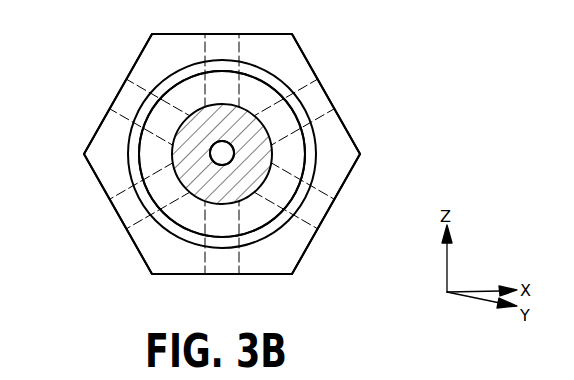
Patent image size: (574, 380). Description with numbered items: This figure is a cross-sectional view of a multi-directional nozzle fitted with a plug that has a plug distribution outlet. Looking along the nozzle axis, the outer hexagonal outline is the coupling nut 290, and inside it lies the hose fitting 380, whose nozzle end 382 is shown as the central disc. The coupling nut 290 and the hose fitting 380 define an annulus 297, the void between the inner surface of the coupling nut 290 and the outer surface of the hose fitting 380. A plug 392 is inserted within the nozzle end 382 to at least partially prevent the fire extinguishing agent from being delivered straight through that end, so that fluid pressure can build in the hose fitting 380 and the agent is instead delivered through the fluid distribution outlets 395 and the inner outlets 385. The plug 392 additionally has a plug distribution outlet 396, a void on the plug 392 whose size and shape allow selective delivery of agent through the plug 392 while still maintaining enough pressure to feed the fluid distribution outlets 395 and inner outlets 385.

The coupling nut 290 is at (352, 152).
The annulus 297 is at (272, 83).
The inner outlets 385 is at (153, 112).
The hose fitting 380 is at (188, 213).
The nozzle end 382 is at (268, 133).
The plug 392 is at (210, 153).
The plug distribution outlet 396 is at (228, 158).
The fluid distribution outlets 395 is at (128, 93).